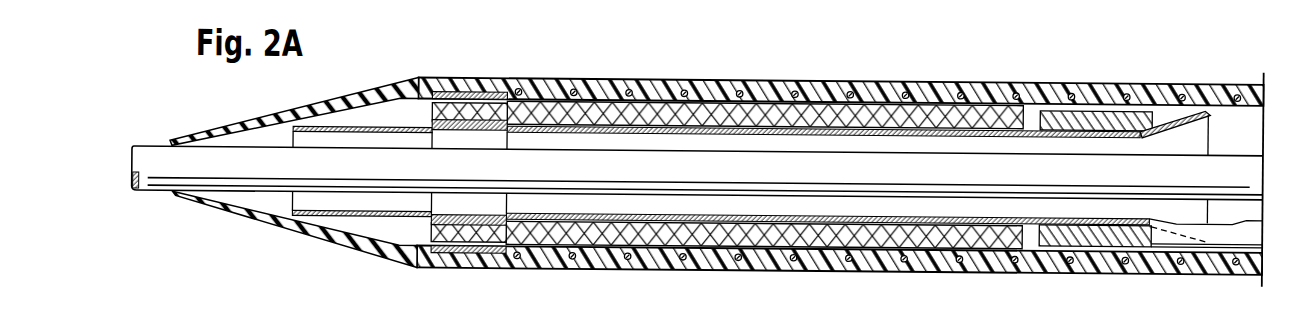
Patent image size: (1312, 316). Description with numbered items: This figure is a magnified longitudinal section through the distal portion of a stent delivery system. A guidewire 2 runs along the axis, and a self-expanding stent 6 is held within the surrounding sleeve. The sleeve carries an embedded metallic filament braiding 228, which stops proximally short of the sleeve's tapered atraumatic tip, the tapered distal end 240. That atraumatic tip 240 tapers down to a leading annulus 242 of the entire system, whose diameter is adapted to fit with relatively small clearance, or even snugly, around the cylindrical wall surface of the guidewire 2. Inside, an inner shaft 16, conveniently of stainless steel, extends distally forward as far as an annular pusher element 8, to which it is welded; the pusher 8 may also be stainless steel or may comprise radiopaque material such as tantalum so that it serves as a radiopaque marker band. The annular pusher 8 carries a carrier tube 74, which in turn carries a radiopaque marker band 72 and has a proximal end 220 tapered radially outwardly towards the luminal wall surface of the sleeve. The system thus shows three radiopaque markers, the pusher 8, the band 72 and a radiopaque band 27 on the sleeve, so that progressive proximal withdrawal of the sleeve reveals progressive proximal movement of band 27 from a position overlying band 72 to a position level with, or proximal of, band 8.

The guidewire 2 is at (150, 146).
The tapered distal end 240 is at (310, 110).
The leading annulus 242 is at (175, 194).
The radiopaque marker band 72 is at (430, 125).
The self-expanding stent 6 is at (548, 98).
The embedded metallic filament braiding 228 is at (742, 88).
The carrier tube 74 is at (923, 125).
The annular pusher element 8 is at (1090, 110).
The proximal end 220 is at (1174, 112).
The inner shaft 16 is at (1257, 221).
The radiopaque band 27 is at (483, 250).